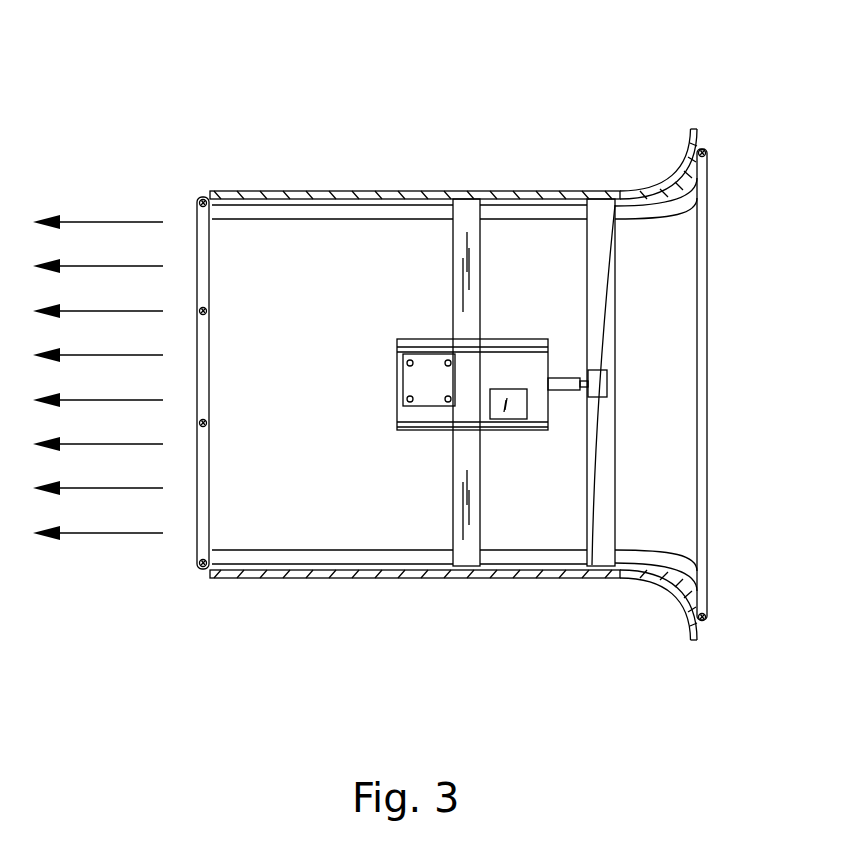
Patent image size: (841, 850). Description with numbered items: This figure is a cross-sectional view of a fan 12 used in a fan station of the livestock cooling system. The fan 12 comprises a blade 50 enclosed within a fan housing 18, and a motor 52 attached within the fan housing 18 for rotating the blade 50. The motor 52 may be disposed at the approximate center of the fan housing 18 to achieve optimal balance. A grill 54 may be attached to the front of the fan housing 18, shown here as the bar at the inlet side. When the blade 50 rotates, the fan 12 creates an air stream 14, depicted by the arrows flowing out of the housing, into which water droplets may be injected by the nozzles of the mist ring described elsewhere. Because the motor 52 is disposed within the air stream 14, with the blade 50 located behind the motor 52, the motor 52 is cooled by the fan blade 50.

The fan 12 is at (470, 132).
The air stream 14 is at (114, 383).
The fan housing 18 is at (343, 191).
The blade 50 is at (608, 200).
The motor 52 is at (437, 338).
The grill 54 is at (198, 200).